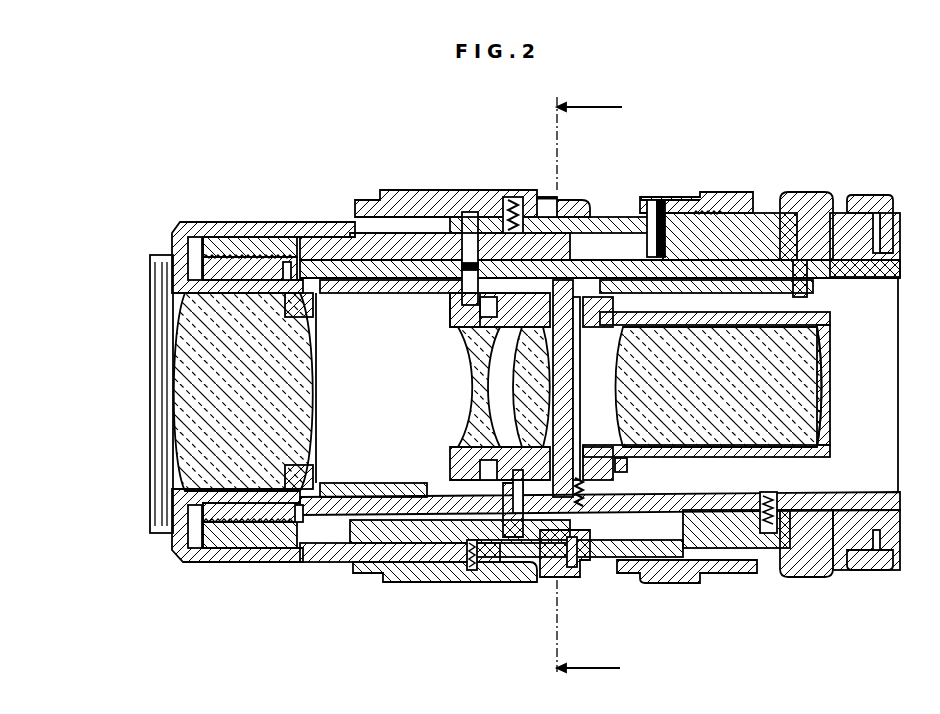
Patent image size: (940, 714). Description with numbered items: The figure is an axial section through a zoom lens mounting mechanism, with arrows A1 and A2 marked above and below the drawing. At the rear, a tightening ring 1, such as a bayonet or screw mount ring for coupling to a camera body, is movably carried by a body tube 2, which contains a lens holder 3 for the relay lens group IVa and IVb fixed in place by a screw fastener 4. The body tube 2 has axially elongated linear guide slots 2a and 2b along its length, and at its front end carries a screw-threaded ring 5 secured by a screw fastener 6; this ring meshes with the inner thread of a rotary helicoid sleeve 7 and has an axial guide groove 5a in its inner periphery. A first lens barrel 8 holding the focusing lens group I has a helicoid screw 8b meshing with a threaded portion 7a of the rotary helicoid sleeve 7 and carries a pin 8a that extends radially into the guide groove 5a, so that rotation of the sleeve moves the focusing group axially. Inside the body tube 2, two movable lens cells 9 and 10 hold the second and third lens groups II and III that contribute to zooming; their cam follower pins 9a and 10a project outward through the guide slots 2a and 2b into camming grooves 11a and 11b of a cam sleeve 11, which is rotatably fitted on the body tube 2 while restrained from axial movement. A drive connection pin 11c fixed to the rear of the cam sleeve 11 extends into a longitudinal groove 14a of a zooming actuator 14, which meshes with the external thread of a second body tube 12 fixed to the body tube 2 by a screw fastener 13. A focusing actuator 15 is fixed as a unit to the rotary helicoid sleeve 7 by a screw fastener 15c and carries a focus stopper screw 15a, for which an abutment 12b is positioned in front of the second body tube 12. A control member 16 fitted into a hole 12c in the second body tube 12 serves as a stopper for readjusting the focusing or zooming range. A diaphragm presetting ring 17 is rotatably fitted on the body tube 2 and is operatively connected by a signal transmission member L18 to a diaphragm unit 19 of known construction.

The tightening ring 1 is at (869, 197).
The body tube 2 is at (840, 218).
The linear guide slot 2a is at (382, 294).
The linear guide slot 2b is at (432, 483).
The lens holder 3 is at (830, 312).
The screw fastener 4 is at (593, 565).
The screw-threaded ring 5 is at (268, 540).
The axial guide groove 5a is at (232, 256).
The screw fastener 6 is at (299, 522).
The rotary helicoid sleeve 7 is at (256, 240).
The threaded portion 7a is at (240, 525).
The first lens barrel 8 is at (195, 222).
The pin 8a is at (288, 264).
The helicoid screw 8b is at (217, 548).
The movable lens cell 9 is at (455, 322).
The cam follower pin 9a is at (452, 305).
The movable lens cell 10 is at (562, 436).
The cam follower pin 10a is at (512, 535).
The cam sleeve 11 is at (325, 255).
The camming groove 11a is at (470, 250).
The camming groove 11b is at (519, 515).
The drive connection pin 11c is at (661, 200).
The second body tube 12 is at (766, 235).
The abutment 12b is at (546, 198).
The hole 12c is at (650, 220).
The screw fastener 13 is at (770, 533).
The zooming actuator 14 is at (735, 205).
The longitudinal groove 14a is at (678, 198).
The focusing actuator 15 is at (413, 200).
The focus stopper screw 15a is at (512, 215).
The screw fastener 15c is at (470, 570).
The control member 16 is at (552, 580).
The diaphragm presetting ring 17 is at (806, 210).
The diaphragm unit 19 is at (610, 473).
The signal transmission member L18 is at (800, 290).
The focusing lens group I is at (183, 387).
The second lens group II is at (470, 372).
The third lens group III is at (522, 398).
The relay lens group IVa is at (602, 378).
The relay lens group IVb is at (818, 380).
The section arrow A1 is at (589, 136).
The section arrow A2 is at (588, 626).